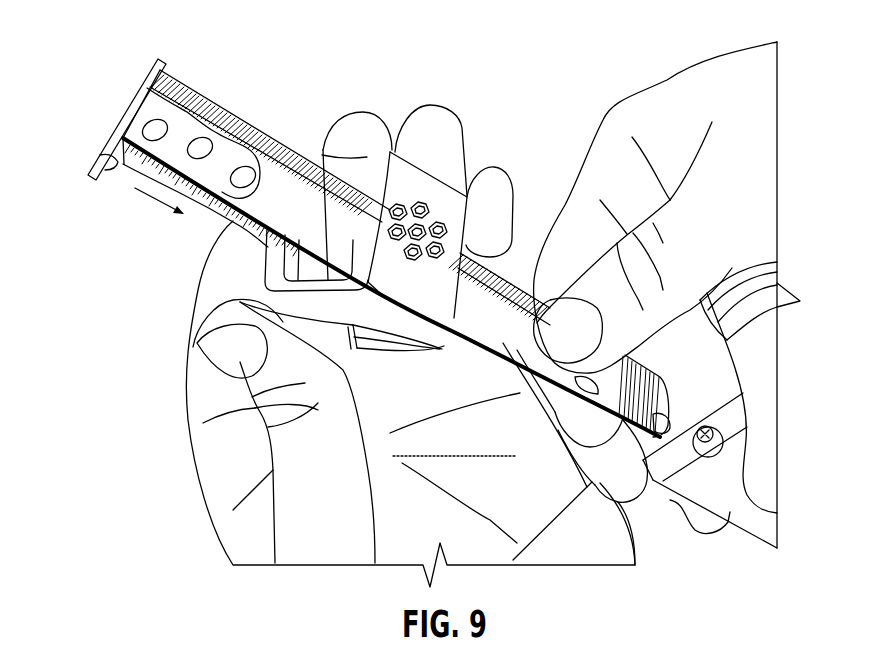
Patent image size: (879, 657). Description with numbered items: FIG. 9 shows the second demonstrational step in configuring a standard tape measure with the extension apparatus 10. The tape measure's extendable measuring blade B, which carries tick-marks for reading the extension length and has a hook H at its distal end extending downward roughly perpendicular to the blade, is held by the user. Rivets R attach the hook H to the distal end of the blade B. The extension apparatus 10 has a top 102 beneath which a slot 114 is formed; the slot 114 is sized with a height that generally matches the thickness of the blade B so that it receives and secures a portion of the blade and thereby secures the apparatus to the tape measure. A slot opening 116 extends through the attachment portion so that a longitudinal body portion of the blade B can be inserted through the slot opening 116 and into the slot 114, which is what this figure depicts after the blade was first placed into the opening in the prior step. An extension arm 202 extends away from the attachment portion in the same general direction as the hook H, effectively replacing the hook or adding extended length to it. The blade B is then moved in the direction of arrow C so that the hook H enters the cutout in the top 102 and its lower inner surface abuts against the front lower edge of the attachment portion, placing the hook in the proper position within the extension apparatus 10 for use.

The extension apparatus 10 is at (522, 100).
The top 102 is at (423, 180).
The slot 114 is at (366, 221).
The slot opening 116 is at (400, 350).
The extension arm 202 is at (257, 292).
The blade B is at (230, 107).
The hook H is at (100, 165).
The rivets R is at (207, 135).
The arrow C (direction of blade movement) C is at (151, 199).